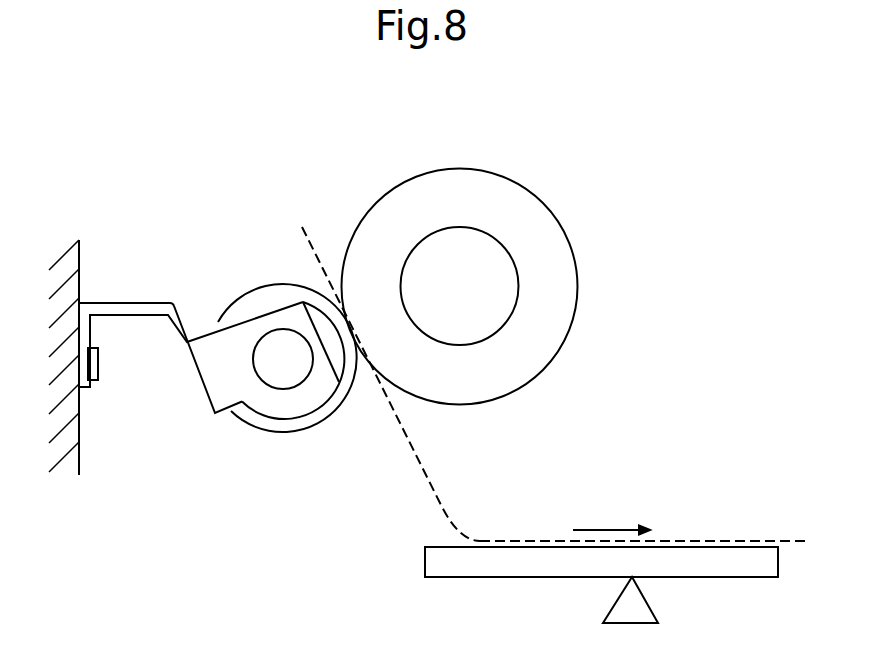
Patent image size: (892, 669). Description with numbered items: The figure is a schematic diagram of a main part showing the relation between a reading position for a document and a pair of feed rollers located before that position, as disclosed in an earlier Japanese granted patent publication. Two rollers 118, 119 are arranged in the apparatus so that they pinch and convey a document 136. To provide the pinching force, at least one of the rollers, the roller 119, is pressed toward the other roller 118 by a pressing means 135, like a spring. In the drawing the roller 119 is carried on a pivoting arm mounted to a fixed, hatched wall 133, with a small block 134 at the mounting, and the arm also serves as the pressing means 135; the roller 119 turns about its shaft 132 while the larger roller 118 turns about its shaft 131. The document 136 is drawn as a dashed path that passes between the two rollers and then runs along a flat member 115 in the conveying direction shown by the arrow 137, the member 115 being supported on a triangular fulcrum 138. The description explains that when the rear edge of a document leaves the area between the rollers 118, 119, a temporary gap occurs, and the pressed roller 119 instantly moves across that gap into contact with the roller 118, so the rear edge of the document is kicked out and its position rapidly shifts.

The recording medium (sheet) 115 is at (762, 578).
The roller 118 is at (477, 168).
The roller 119 is at (270, 286).
The shaft of conveying roller 131 is at (488, 315).
The shaft of pressing roller 132 is at (293, 367).
The frame wall 133 is at (81, 249).
The stopper 134 is at (98, 353).
The pressing means 135 is at (205, 392).
The document 136 is at (422, 468).
The conveying direction 137 is at (593, 530).
The support (fulcrum) 138 is at (658, 617).